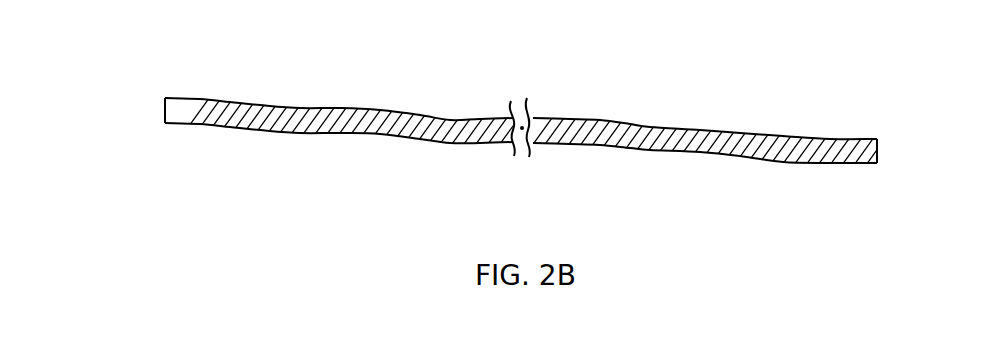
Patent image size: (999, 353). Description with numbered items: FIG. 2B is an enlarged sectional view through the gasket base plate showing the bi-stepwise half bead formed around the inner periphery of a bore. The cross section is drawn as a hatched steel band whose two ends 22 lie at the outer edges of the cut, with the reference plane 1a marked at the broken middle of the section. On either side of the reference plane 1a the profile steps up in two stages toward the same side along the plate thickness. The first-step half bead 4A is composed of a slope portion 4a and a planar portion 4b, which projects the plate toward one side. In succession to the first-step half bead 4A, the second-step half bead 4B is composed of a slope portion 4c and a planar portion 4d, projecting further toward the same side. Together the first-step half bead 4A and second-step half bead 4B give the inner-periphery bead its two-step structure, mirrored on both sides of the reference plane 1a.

The reference plane 1a is at (553, 138).
The end portion 22 is at (165, 110).
The first-step half bead 4A is at (415, 210).
The second-step half bead 4B is at (280, 210).
The slope portion 4a is at (397, 136).
The planar portion 4b is at (343, 118).
The slope portion 4c is at (258, 130).
The planar portion 4d is at (205, 124).